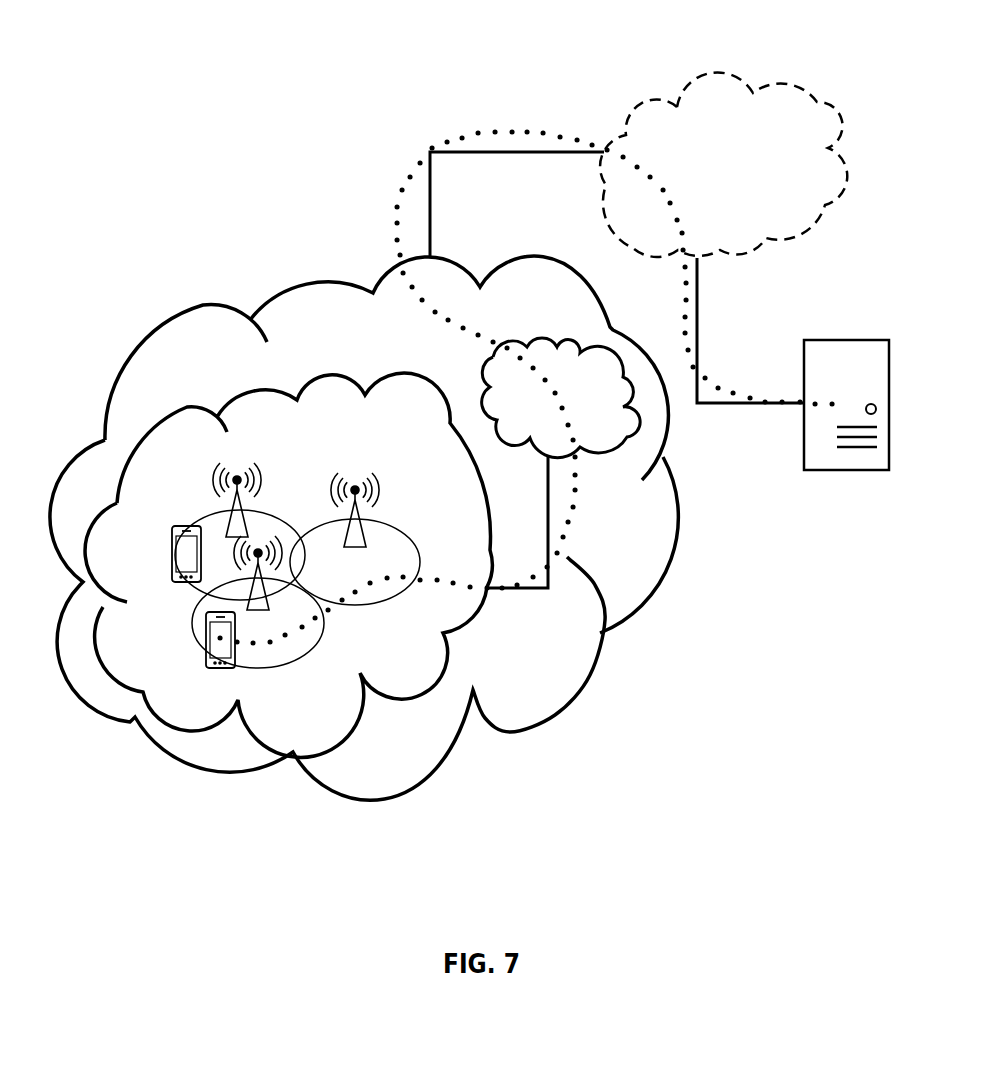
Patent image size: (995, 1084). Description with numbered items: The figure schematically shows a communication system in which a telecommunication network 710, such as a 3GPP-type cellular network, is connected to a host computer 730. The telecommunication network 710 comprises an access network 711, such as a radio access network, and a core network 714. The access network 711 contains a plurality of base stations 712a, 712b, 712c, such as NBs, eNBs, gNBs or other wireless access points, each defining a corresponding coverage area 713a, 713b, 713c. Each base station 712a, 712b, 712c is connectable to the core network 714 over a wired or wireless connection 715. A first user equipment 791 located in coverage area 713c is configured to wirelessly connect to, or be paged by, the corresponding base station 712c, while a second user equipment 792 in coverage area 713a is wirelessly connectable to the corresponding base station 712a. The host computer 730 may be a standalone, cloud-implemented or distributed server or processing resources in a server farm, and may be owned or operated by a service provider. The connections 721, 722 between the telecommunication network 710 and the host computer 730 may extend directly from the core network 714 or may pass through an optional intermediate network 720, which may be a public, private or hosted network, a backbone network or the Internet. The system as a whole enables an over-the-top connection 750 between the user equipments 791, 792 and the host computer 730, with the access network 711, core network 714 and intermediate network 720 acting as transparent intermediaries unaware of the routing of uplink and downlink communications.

The telecommunication network 710 is at (364, 528).
The access network 711 is at (288, 565).
The base station 712a is at (267, 612).
The base station 712b is at (375, 495).
The base station 712c is at (212, 484).
The coverage area 713a is at (237, 618).
The coverage area 713b is at (385, 510).
The coverage area 713c is at (185, 525).
The core network 714 is at (561, 398).
The connection 715 is at (553, 503).
The intermediate network 720 is at (723, 164).
The connection 721 is at (513, 152).
The connection 722 is at (758, 403).
The host computer 730 is at (846, 421).
The OTT connection 750 is at (405, 183).
The first user equipment 791 is at (178, 520).
The second user equipment 792 is at (197, 653).